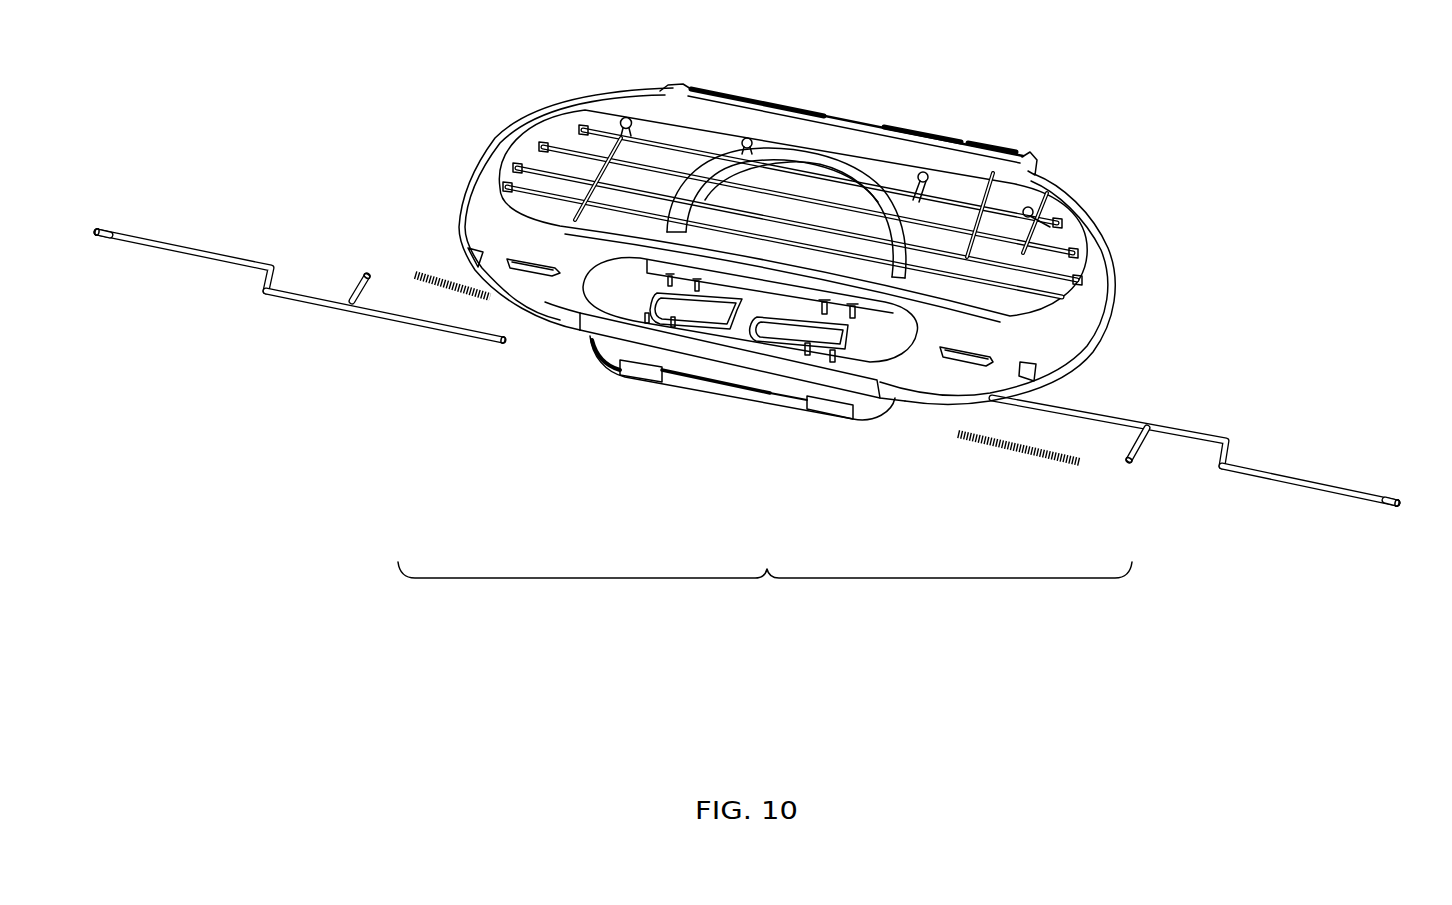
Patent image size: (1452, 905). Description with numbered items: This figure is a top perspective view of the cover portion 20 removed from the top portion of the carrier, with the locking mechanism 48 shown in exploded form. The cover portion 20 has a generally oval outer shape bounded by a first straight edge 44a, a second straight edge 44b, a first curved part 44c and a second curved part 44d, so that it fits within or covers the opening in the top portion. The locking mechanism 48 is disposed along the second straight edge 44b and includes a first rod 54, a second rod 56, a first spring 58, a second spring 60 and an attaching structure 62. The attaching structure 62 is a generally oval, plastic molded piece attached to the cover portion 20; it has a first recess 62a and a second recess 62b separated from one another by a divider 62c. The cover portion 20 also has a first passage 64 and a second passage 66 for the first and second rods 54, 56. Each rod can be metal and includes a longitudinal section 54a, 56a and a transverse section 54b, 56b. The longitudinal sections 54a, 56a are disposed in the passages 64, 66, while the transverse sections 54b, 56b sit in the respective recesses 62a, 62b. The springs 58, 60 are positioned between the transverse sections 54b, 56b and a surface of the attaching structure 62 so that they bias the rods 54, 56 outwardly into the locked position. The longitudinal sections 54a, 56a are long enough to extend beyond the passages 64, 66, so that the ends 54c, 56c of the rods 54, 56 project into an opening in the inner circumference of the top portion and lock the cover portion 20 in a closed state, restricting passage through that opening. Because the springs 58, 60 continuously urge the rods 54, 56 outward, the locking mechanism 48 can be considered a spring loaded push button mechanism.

The cover portion 20 is at (1082, 205).
The first straight edge 44a is at (877, 122).
The second straight edge 44b is at (806, 372).
The first curved part 44c is at (1120, 284).
The second curved part 44d is at (462, 185).
The locking mechanism 48 is at (765, 591).
The first rod 54 is at (410, 328).
The longitudinal section of first rod 54a is at (174, 240).
The transverse section of first rod 54b is at (350, 287).
The end of first rod 54c is at (93, 228).
The second rod 56 is at (1197, 442).
The longitudinal section of second rod 56a is at (1314, 480).
The transverse section of second rod 56b is at (1141, 447).
The end of second rod 56c is at (1400, 507).
The first spring 58 is at (455, 300).
The second spring 60 is at (1032, 457).
The attaching structure 62 is at (724, 392).
The first recess 62a is at (709, 311).
The second recess 62b is at (797, 325).
The divider 62c is at (753, 320).
The first passage 64 is at (533, 258).
The second passage 66 is at (960, 343).